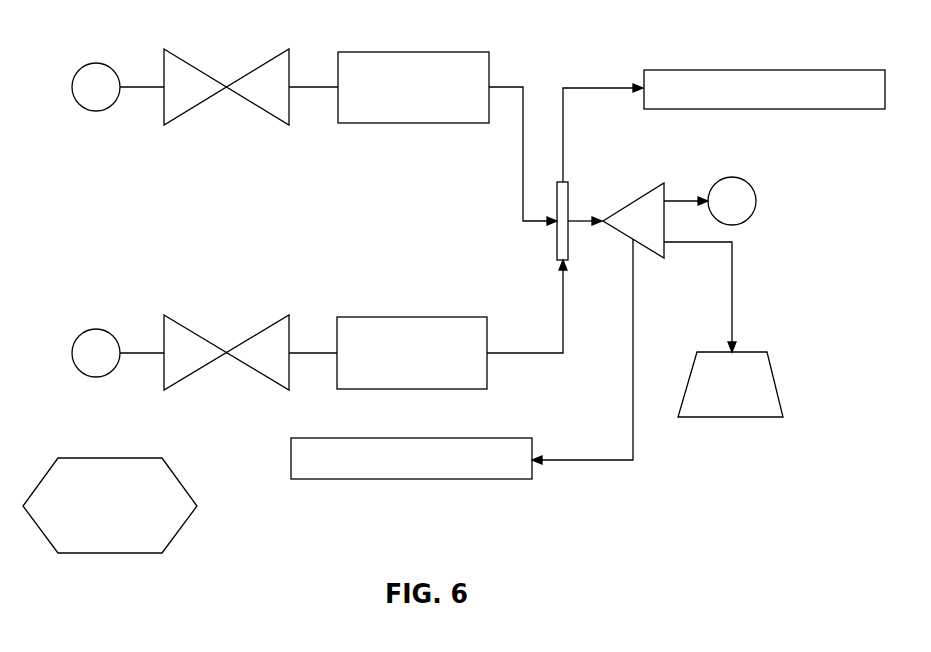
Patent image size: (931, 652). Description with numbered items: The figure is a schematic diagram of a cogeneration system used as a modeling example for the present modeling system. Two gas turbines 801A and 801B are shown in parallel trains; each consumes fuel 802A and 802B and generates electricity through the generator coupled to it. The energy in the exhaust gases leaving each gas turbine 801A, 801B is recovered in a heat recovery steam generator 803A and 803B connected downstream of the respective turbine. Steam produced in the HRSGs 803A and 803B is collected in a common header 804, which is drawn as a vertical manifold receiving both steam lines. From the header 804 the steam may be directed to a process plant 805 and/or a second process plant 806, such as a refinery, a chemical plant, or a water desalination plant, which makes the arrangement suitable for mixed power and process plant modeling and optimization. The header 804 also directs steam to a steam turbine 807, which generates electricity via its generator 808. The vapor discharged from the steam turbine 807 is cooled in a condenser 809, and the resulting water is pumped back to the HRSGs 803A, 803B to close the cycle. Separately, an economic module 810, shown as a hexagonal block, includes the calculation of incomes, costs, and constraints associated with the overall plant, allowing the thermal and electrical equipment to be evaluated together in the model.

The gas turbine 801A is at (197, 62).
The gas turbine 801B is at (197, 328).
The fuel 802A is at (97, 62).
The fuel 802B is at (97, 329).
The heat recovery steam generator 803A is at (425, 52).
The heat recovery steam generator 803B is at (423, 317).
The header 804 is at (556, 238).
The process plant 805 is at (712, 70).
The process plant 806 is at (357, 438).
The steam turbine 807 is at (633, 200).
The generator 808 is at (752, 352).
The condenser 809 is at (735, 177).
The economic module 810 is at (92, 458).